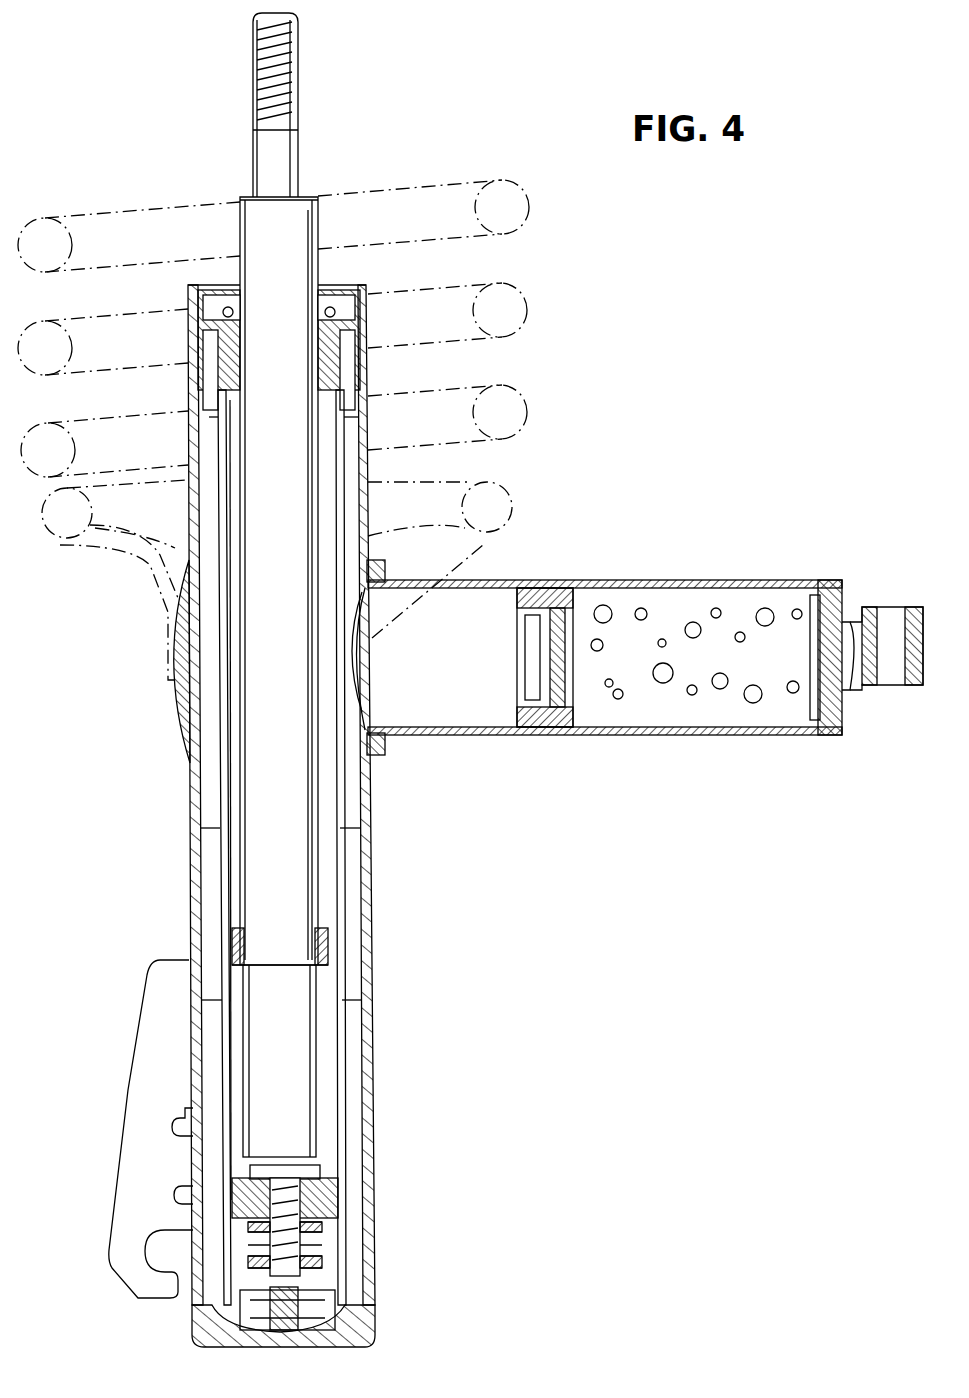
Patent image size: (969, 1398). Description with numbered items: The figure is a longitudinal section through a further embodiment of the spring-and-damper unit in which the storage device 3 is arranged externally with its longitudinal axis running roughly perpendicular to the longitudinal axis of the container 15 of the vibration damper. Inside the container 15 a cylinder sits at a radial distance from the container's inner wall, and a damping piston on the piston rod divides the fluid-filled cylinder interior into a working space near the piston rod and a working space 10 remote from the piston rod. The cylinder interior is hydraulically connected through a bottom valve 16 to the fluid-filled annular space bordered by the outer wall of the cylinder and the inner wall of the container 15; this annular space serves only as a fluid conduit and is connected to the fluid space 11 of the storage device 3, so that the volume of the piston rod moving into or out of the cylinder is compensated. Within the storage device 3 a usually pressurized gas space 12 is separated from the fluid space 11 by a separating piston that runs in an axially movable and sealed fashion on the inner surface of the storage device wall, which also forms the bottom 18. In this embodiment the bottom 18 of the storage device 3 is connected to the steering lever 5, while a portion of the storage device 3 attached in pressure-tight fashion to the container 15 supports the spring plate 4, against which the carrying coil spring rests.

The storage device 3 is at (647, 738).
The spring plate 4 is at (148, 590).
The steering lever 5 is at (868, 607).
The working space remote from the piston rod 10 is at (327, 1270).
The fluid space 11 is at (487, 625).
The gas space 12 is at (662, 610).
The container 15 is at (372, 990).
The bottom valve 16 is at (340, 1310).
The bottom 18 is at (827, 587).